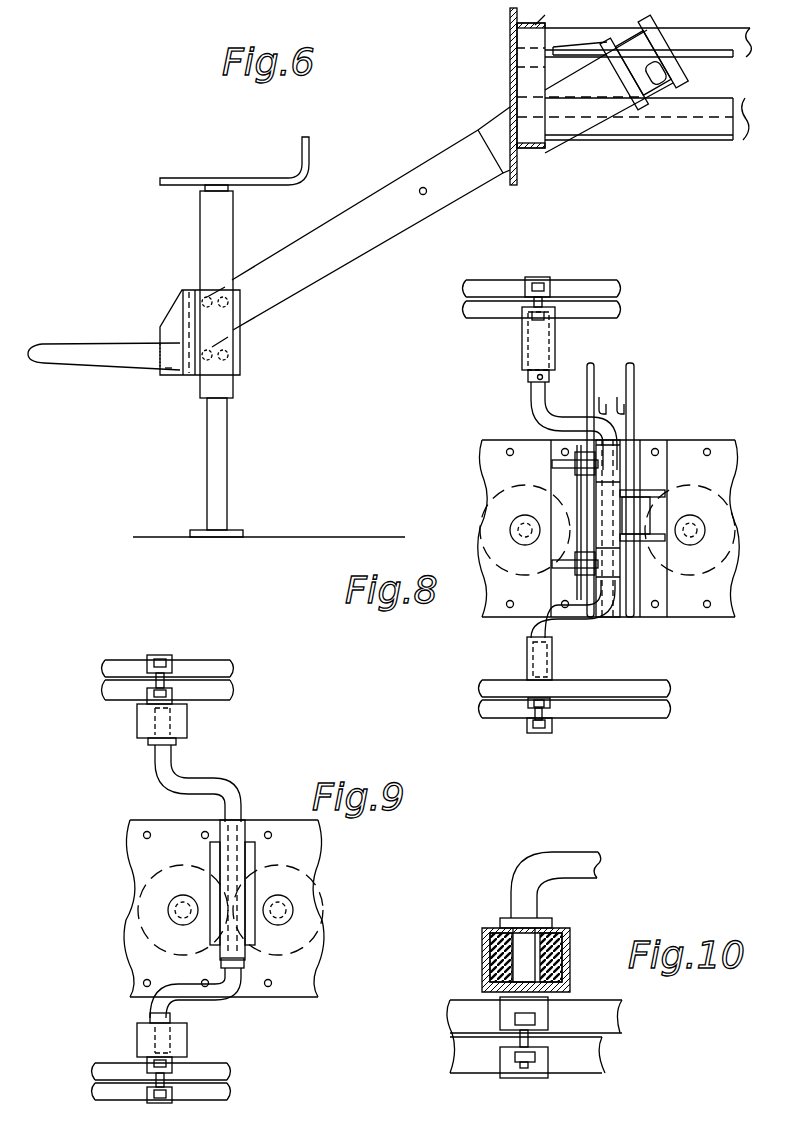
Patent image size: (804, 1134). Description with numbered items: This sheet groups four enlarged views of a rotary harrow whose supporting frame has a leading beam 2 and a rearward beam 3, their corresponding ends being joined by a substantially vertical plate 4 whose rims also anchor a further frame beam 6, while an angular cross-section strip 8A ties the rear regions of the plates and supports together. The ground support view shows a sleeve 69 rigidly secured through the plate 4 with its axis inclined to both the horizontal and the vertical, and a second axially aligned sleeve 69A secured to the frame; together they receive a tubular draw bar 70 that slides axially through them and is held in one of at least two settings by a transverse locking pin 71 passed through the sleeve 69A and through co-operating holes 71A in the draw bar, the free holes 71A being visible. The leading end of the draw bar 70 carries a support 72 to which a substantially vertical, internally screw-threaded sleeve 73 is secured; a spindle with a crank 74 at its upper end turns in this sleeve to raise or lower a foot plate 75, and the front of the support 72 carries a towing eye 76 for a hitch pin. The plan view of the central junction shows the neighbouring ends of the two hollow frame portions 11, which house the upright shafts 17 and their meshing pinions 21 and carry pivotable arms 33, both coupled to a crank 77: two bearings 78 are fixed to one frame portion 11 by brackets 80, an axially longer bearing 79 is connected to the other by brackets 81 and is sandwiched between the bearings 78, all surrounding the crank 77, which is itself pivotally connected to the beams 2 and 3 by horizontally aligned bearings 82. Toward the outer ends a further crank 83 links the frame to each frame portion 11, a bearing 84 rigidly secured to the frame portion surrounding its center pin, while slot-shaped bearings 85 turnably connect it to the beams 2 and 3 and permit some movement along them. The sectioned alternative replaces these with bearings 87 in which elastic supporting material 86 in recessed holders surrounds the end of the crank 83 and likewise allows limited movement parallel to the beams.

In FIG. 8, the frame beam 2 is at (620, 686).
In FIG. 9, the frame beam 2 is at (206, 1065).
In FIG. 10, the frame beam 2 is at (460, 1016).
In FIG. 6, the frame beam 3 is at (745, 132).
In FIG. 8, the frame beam 3 is at (590, 283).
In FIG. 9, the frame beam 3 is at (208, 668).
In FIG. 6, the vertical plate 4 is at (510, 47).
In FIG. 6, the further frame beam 6 is at (733, 35).
In FIG. 6, the angular cross-section strip 8A is at (690, 125).
In FIG. 8, the frame portion 11 is at (482, 455).
In FIG. 9, the frame portion 11 is at (140, 820).
In FIG. 8, the shaft 17 is at (495, 536).
In FIG. 9, the shaft 17 is at (196, 916).
In FIG. 8, the pinion 21 is at (480, 514).
In FIG. 9, the pinion 21 is at (132, 882).
In FIG. 8, the arm 33 is at (598, 372).
In FIG. 6, the sleeve 69 is at (488, 122).
In FIG. 6, the second sleeve 69A is at (640, 40).
In FIG. 6, the draw bar 70 is at (337, 230).
In FIG. 6, the locking pin 71 is at (672, 72).
In FIG. 6, the holes 71A is at (419, 192).
In FIG. 6, the support 72 is at (242, 352).
In FIG. 6, the sleeve 73 is at (210, 247).
In FIG. 6, the crank 74 is at (186, 180).
In FIG. 6, the foot plate 75 is at (207, 530).
In FIG. 6, the towing eye 76 is at (77, 349).
In FIG. 8, the crank 77 is at (531, 397).
In FIG. 8, the bearings 78 is at (617, 460).
In FIG. 8, the bearing 79 is at (636, 515).
In FIG. 8, the brackets 80 is at (565, 462).
In FIG. 8, the brackets 81 is at (660, 492).
In FIG. 8, the bearings 82 is at (522, 350).
In FIG. 9, the crank 83 is at (216, 783).
In FIG. 10, the crank 83 is at (594, 841).
In FIG. 9, the bearing 84 is at (236, 840).
In FIG. 9, the bearings 85 is at (137, 710).
In FIG. 10, the elastic supporting material 86 is at (505, 937).
In FIG. 10, the bearings 87 is at (576, 932).